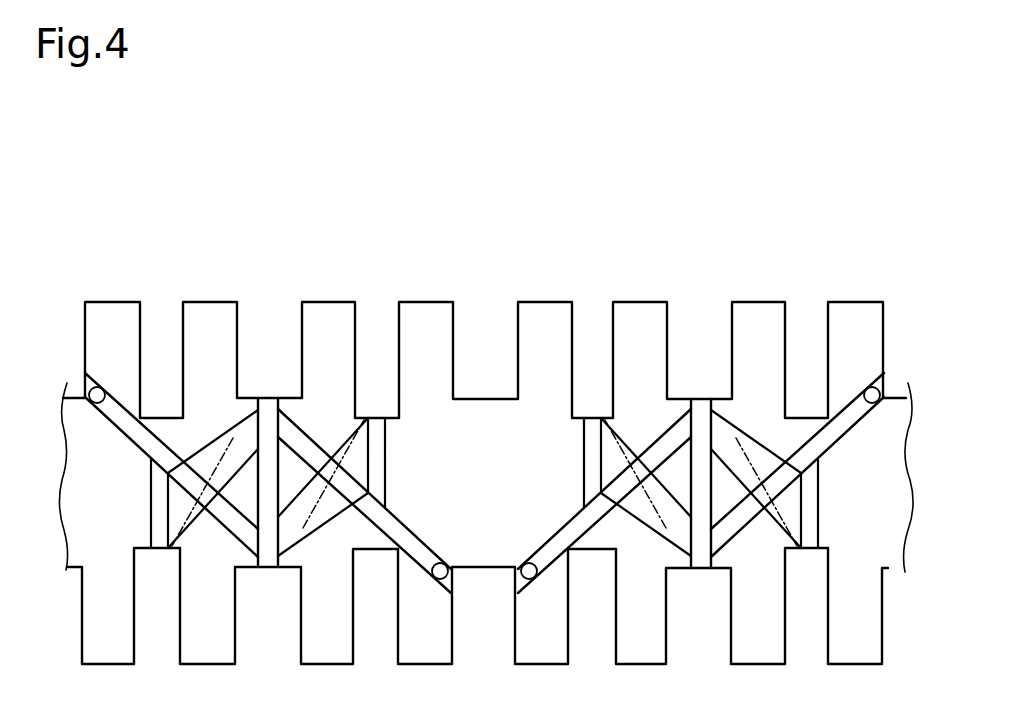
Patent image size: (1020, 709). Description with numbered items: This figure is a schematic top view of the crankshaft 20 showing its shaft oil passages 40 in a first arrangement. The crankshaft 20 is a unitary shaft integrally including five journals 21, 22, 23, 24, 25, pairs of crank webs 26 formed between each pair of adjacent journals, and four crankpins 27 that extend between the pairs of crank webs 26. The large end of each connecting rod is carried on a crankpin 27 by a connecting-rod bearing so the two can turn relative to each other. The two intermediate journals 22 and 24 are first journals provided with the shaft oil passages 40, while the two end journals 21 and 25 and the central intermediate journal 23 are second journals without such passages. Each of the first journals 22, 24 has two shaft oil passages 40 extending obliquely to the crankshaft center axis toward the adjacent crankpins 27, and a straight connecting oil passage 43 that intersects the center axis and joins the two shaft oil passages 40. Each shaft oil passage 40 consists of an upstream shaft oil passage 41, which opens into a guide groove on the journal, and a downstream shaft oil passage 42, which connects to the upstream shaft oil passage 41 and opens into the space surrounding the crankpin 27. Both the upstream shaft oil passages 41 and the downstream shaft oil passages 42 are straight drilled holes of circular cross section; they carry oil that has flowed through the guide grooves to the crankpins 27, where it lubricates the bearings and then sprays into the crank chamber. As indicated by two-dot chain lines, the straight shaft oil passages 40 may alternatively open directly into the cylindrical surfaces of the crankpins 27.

The crankshaft 20 is at (571, 240).
The journal 21 is at (887, 570).
The journal 22 is at (712, 570).
The journal 23 is at (490, 570).
The journal 24 is at (283, 575).
The journal 25 is at (68, 572).
The crank webs 26 is at (442, 302).
The crankpin 27 is at (162, 418).
The shaft oil passage 40 is at (340, 430).
The upstream shaft oil passage 41 is at (137, 430).
The downstream shaft oil passage 42 is at (150, 496).
The connecting oil passage 43 is at (256, 490).